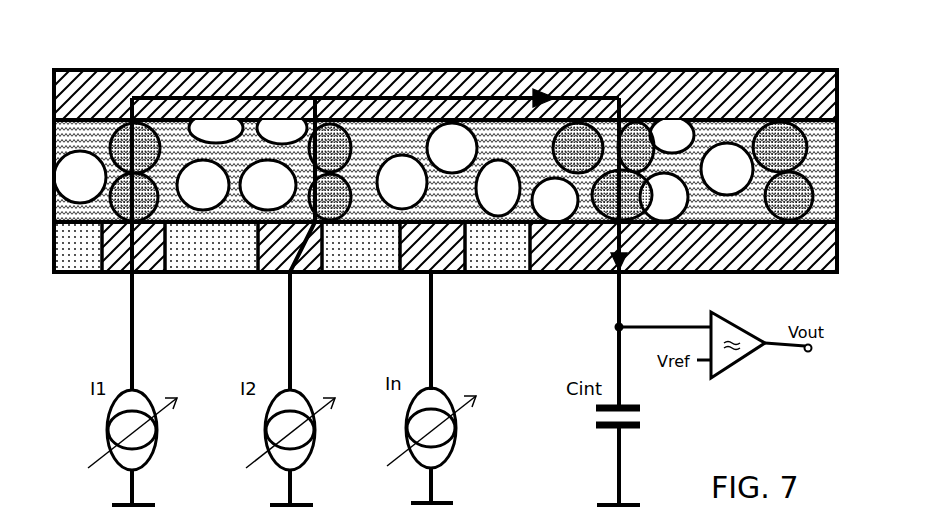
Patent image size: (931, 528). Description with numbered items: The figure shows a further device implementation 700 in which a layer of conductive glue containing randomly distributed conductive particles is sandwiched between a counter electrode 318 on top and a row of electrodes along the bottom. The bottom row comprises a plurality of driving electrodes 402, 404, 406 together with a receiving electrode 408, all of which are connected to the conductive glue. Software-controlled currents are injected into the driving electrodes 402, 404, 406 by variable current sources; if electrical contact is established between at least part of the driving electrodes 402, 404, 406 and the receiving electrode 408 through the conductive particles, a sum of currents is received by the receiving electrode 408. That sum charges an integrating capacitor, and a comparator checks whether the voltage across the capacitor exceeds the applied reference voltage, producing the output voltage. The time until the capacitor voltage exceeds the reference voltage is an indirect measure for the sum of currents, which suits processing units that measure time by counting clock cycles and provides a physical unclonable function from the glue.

The device implementation 700 is at (445, 204).
The counter electrode 318 is at (687, 71).
The driving electrode 402 is at (157, 273).
The driving electrode 404 is at (312, 274).
The driving electrode 406 is at (455, 274).
The receiving electrode 408 is at (555, 273).